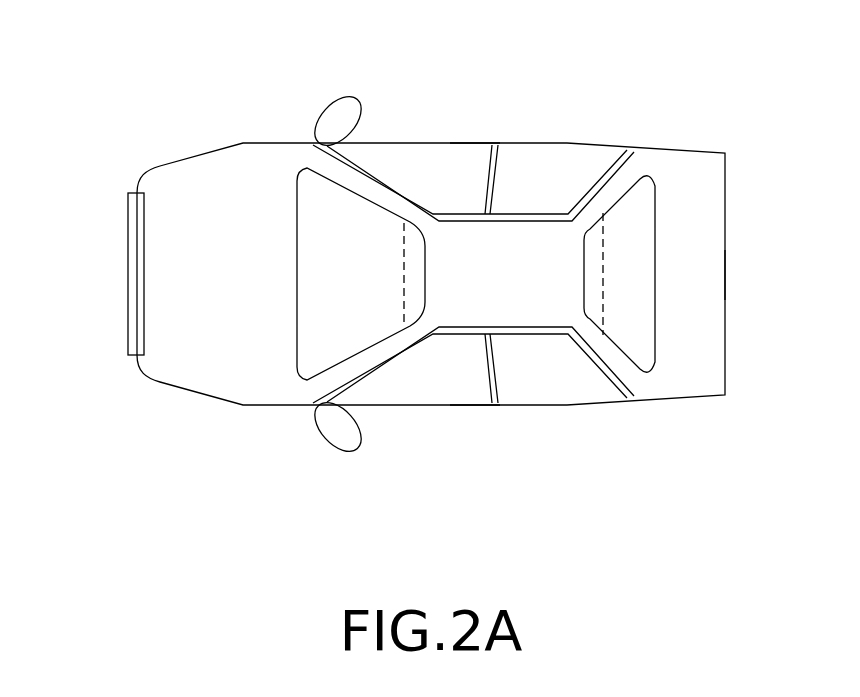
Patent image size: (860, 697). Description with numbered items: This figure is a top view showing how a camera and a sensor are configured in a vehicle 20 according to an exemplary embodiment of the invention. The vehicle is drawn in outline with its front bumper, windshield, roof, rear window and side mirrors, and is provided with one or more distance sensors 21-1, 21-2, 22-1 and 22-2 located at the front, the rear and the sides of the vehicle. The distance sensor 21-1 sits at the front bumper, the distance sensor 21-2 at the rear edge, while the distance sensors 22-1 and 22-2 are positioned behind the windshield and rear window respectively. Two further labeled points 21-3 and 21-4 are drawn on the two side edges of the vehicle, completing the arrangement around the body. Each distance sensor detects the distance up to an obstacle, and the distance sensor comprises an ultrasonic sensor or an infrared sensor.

The vehicle 20 is at (630, 103).
The distance sensor 21-1 is at (137, 275).
The distance sensor 21-2 is at (724, 275).
The right side sensor 21-3 is at (473, 405).
The left side sensor 21-4 is at (473, 145).
The distance sensor 22-1 is at (403, 275).
The distance sensor 22-2 is at (603, 275).